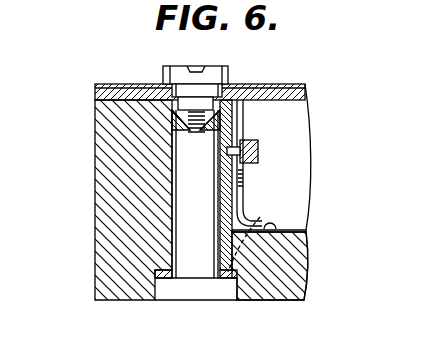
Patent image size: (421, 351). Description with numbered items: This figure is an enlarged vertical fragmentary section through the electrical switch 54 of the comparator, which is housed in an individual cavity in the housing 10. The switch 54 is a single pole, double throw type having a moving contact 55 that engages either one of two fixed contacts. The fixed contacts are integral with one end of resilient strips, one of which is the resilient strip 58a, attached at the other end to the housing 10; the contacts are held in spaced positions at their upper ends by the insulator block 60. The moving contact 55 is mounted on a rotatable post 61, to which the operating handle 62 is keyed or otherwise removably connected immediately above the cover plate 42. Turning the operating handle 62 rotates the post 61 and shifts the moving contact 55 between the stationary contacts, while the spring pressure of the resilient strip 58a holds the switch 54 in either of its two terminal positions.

The housing 10 is at (95, 218).
The cover plate 42 is at (306, 96).
The switch 54 is at (287, 163).
The moving contact 55 is at (232, 140).
The resilient strip 58a is at (243, 192).
The insulator block 60 is at (258, 153).
The rotatable post 61 is at (200, 237).
The operating handle 62 is at (229, 80).